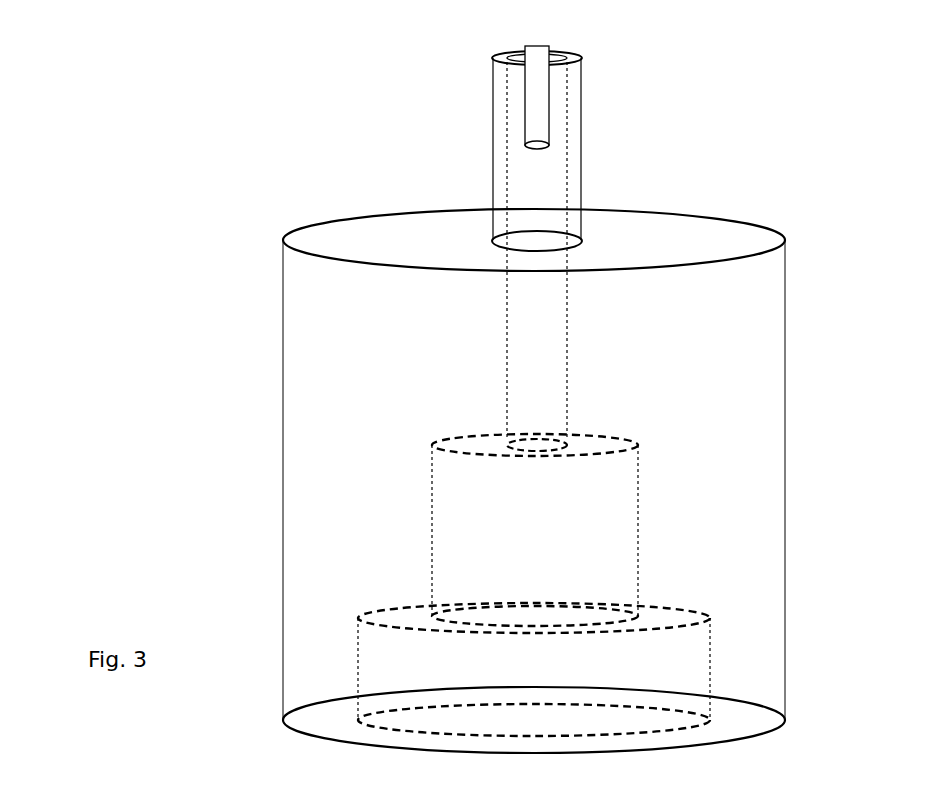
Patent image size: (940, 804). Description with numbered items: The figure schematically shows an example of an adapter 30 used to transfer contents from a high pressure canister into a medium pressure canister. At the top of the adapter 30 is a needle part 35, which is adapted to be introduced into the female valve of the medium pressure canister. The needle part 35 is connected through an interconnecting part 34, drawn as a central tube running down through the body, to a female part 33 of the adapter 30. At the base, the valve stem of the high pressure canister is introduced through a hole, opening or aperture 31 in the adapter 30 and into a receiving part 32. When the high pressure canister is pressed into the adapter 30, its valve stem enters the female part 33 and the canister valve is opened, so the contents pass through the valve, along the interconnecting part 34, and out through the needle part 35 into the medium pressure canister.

The adapter 30 is at (786, 415).
The hole, opening or aperture 31 is at (472, 720).
The receiving part 32 is at (710, 678).
The female part 33 is at (640, 540).
The interconnecting part 34 is at (567, 347).
The needle part 35 is at (538, 117).